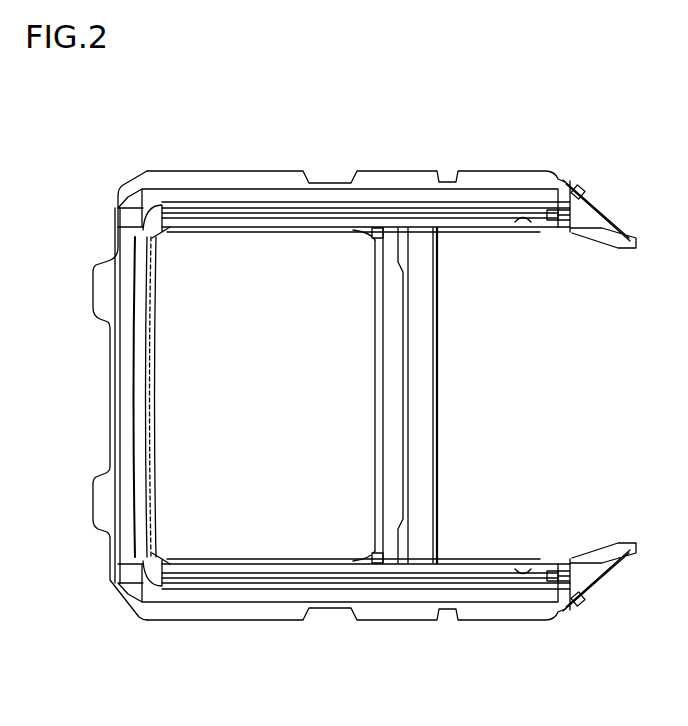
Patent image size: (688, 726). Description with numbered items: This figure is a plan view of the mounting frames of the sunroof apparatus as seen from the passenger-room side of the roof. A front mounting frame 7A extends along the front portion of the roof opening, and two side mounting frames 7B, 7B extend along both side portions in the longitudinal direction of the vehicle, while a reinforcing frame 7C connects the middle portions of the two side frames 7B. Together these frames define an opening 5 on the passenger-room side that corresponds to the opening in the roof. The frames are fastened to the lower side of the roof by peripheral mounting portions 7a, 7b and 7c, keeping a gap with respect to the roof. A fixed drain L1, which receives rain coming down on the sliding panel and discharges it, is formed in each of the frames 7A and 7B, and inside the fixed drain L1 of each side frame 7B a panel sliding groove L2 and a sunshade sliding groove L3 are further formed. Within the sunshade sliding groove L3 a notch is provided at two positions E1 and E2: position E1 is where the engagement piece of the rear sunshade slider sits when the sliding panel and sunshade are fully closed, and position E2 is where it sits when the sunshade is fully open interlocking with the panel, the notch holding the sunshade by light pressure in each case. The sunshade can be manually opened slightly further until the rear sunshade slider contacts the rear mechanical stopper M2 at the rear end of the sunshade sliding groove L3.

The peripheral mounting portion 7b is at (207, 172).
The mounting frame 7B is at (291, 197).
The fixed drain L1 is at (339, 197).
The panel sliding groove L2 is at (390, 210).
The sunshade sliding groove L3 is at (436, 222).
The rear mechanical stopper M2 is at (561, 214).
The position E1 is at (363, 230).
The position E2 is at (531, 219).
The peripheral mounting portion 7a is at (102, 291).
The mounting frame 7A is at (127, 358).
The opening 5 is at (257, 427).
The reinforcing frame 7C is at (385, 378).
The peripheral mounting portion 7c is at (427, 381).